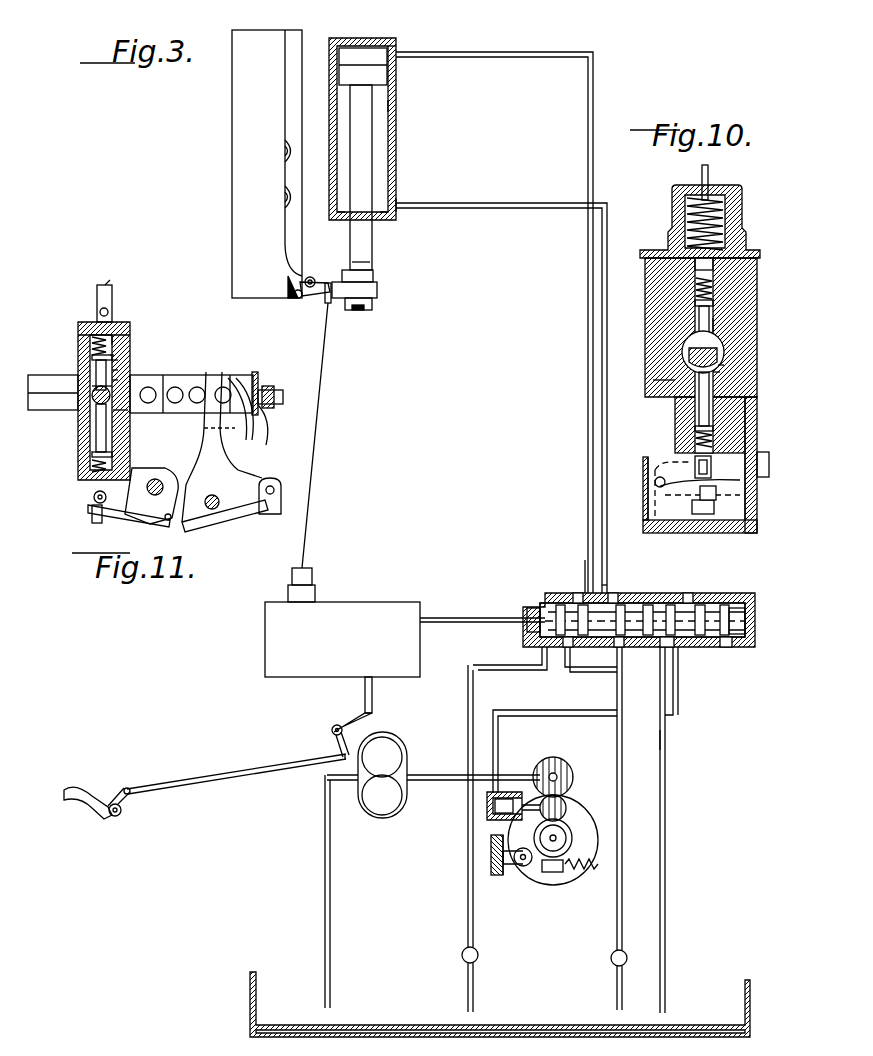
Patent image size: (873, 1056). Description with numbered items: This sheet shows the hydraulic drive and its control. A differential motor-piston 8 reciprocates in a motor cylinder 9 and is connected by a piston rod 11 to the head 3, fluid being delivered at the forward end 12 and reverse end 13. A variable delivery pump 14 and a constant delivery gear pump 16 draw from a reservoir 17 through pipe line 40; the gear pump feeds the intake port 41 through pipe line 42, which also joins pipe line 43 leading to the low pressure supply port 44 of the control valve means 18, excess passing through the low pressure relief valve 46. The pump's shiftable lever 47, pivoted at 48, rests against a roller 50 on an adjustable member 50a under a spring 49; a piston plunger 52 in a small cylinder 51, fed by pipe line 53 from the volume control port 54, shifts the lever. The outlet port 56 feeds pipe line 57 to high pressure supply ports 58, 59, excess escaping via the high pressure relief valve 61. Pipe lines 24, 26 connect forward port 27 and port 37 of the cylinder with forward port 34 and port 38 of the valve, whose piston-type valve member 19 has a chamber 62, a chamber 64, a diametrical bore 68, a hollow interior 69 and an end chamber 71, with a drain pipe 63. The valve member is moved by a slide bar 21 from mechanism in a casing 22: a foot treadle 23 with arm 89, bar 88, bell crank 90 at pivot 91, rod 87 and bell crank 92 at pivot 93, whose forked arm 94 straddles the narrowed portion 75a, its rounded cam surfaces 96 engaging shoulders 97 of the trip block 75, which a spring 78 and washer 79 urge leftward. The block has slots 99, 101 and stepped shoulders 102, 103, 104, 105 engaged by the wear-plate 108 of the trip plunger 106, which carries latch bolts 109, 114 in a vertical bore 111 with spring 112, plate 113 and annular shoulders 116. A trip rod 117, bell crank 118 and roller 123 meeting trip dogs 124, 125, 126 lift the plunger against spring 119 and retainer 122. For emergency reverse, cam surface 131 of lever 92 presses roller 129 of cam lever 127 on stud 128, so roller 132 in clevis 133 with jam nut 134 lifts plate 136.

In FIG. 3, the head 3 is at (267, 164).
In FIG. 3, the differential motor-piston 8 is at (363, 66).
In FIG. 3, the motor cylinder 9 is at (396, 104).
In FIG. 3, the piston rod 11 is at (372, 255).
In FIG. 3, the forward end 12 is at (350, 38).
In FIG. 3, the reverse end 13 is at (342, 216).
In FIG. 3, the selectively variable delivery pump 14 is at (576, 872).
In FIG. 3, the constant delivery gear pump 16 is at (404, 748).
In FIG. 3, the reservoir 17 is at (250, 998).
In FIG. 3, the control valve means 18 is at (728, 596).
In FIG. 3, the piston-type valve member 19 is at (732, 647).
In FIG. 3, the slide bar 21 is at (486, 616).
In FIG. 11, the slide bar 21 is at (282, 398).
In FIG. 3, the casing 22 is at (372, 602).
In FIG. 10, the casing 22 is at (750, 428).
In FIG. 3, the foot treadle 23 is at (88, 790).
In FIG. 3, the pipe line 24 is at (508, 56).
In FIG. 3, the pipe line 26 is at (468, 208).
In FIG. 3, the forward port 27 is at (396, 50).
In FIG. 3, the forward port 34 is at (578, 598).
In FIG. 3, the port 37 is at (392, 214).
In FIG. 3, the port 38 is at (606, 585).
In FIG. 10, the port 38 is at (618, 555).
In FIG. 3, the pipe line 40 is at (330, 902).
In FIG. 3, the intake port 41 is at (541, 768).
In FIG. 3, the pipe line 42 is at (440, 780).
In FIG. 3, the pipe line 43 is at (468, 700).
In FIG. 3, the low pressure supply port 44 is at (535, 660).
In FIG. 3, the low pressure relief valve 46 is at (480, 955).
In FIG. 3, the shiftable lever 47 is at (554, 874).
In FIG. 3, the pivot 48 is at (554, 772).
In FIG. 3, the spring 49 is at (582, 866).
In FIG. 3, the roller 50 is at (530, 866).
In FIG. 3, the adjustable member 50a is at (508, 875).
In FIG. 3, the small cylinder 51 is at (494, 812).
In FIG. 3, the piston plunger 52 is at (488, 806).
In FIG. 3, the pipe line 53 is at (557, 712).
In FIG. 3, the volume control port 54 is at (684, 650).
In FIG. 3, the outlet port 56 is at (570, 776).
In FIG. 3, the pipe line 57 is at (665, 740).
In FIG. 3, the high pressure supply port 58 is at (628, 650).
In FIG. 3, the high pressure supply port 59 is at (570, 648).
In FIG. 3, the high pressure relief valve 61 is at (611, 957).
In FIG. 3, the chamber 62 is at (586, 590).
In FIG. 3, the drain pipe 63 is at (678, 768).
In FIG. 3, the chamber 64 is at (533, 606).
In FIG. 3, the diametrical bore 68 is at (616, 598).
In FIG. 3, the hollow interior 69 is at (688, 598).
In FIG. 3, the end chamber 71 is at (746, 620).
In FIG. 10, the trip block 75 is at (690, 355).
In FIG. 11, the trip block 75 is at (78, 378).
In FIG. 11, the narrowed portion 75a is at (183, 414).
In FIG. 11, the spring 78 is at (268, 408).
In FIG. 11, the washer 79 is at (266, 447).
In FIG. 3, the rod 87 is at (372, 696).
In FIG. 11, the rod 87 is at (278, 514).
In FIG. 3, the bar 88 is at (234, 762).
In FIG. 3, the arm 89 is at (127, 788).
In FIG. 3, the bell crank 90 is at (355, 718).
In FIG. 3, the pivot 91 is at (332, 727).
In FIG. 11, the bell crank 92 is at (200, 465).
In FIG. 10, the pivot 93 is at (656, 500).
In FIG. 11, the pivot 93 is at (219, 502).
In FIG. 11, the forked arm 94 is at (212, 380).
In FIG. 11, the rounded cam surfaces 96 is at (228, 385).
In FIG. 11, the shoulders 97 is at (246, 440).
In FIG. 11, the slot 99 is at (113, 415).
In FIG. 11, the slot 101 is at (58, 410).
In FIG. 10, the stepped shoulder 102 is at (724, 380).
In FIG. 11, the stepped shoulder 102 is at (92, 386).
In FIG. 10, the stepped shoulder 103 is at (724, 362).
In FIG. 11, the stepped shoulder 103 is at (120, 382).
In FIG. 10, the stepped shoulder 104 is at (720, 348).
In FIG. 11, the stepped shoulder 104 is at (120, 372).
In FIG. 10, the stepped shoulder 105 is at (715, 325).
In FIG. 11, the stepped shoulder 105 is at (120, 362).
In FIG. 10, the trip plunger 106 is at (680, 380).
In FIG. 11, the trip plunger 106 is at (130, 332).
In FIG. 11, the wear-plate 108 is at (115, 358).
In FIG. 10, the latch bolt 109 is at (699, 325).
In FIG. 11, the latch bolt 109 is at (96, 368).
In FIG. 10, the vertical bore 111 is at (713, 290).
In FIG. 11, the vertical bore 111 is at (97, 295).
In FIG. 10, the spring 112 is at (696, 283).
In FIG. 11, the spring 112 is at (92, 340).
In FIG. 10, the plate 113 is at (748, 278).
In FIG. 11, the plate 113 is at (116, 325).
In FIG. 10, the latch bolt 114 is at (699, 410).
In FIG. 11, the latch bolt 114 is at (96, 430).
In FIG. 10, the annular shoulder 116 is at (695, 303).
In FIG. 11, the annular shoulder 116 is at (92, 357).
In FIG. 3, the trip rod 117 is at (316, 430).
In FIG. 10, the trip rod 117 is at (708, 170).
In FIG. 11, the trip rod 117 is at (112, 292).
In FIG. 3, the bell crank 118 is at (320, 295).
In FIG. 10, the spring 119 is at (720, 212).
In FIG. 3, the retainer 122 is at (312, 577).
In FIG. 10, the retainer 122 is at (744, 228).
In FIG. 3, the roller 123 is at (295, 300).
In FIG. 3, the trip dog 124 is at (292, 300).
In FIG. 3, the trip dog 125 is at (285, 205).
In FIG. 3, the trip dog 126 is at (285, 158).
In FIG. 10, the cam lever 127 is at (714, 505).
In FIG. 11, the cam lever 127 is at (145, 496).
In FIG. 10, the stud 128 is at (780, 462).
In FIG. 11, the stud 128 is at (160, 480).
In FIG. 11, the roller 129 is at (167, 522).
In FIG. 10, the cam surface 131 is at (700, 520).
In FIG. 11, the cam surface 131 is at (180, 530).
In FIG. 10, the roller 132 is at (712, 468).
In FIG. 11, the roller 132 is at (94, 500).
In FIG. 10, the clevis 133 is at (660, 480).
In FIG. 11, the clevis 133 is at (92, 520).
In FIG. 10, the jam nut 134 is at (708, 515).
In FIG. 11, the jam nut 134 is at (129, 527).
In FIG. 10, the plate 136 is at (700, 450).
In FIG. 11, the plate 136 is at (92, 476).